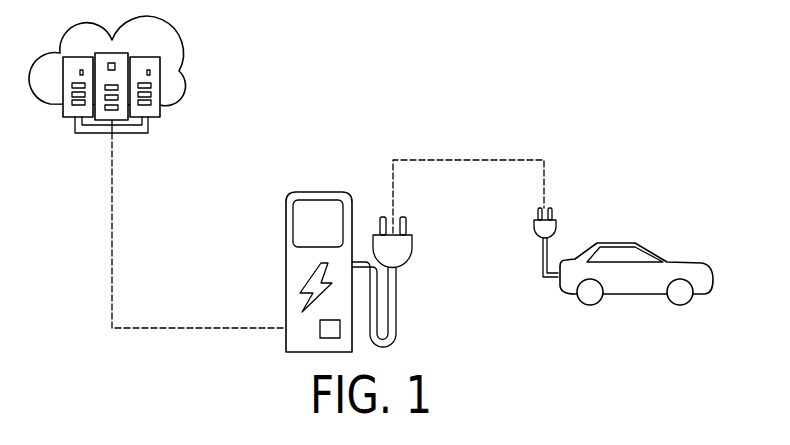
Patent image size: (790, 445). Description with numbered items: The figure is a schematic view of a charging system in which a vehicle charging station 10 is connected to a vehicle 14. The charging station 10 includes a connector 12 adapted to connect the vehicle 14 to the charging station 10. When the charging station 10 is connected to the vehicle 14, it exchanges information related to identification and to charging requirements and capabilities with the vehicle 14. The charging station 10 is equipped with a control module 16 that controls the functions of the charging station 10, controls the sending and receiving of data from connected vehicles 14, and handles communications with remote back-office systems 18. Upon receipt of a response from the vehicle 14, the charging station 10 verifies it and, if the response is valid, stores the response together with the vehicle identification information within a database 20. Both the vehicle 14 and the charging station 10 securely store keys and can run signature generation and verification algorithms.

The vehicle charging station 10 is at (309, 254).
The connector 12 is at (467, 160).
The vehicle 14 is at (672, 262).
The control module 16 is at (273, 353).
The remote back-office systems 18 is at (163, 111).
The database 20 is at (332, 328).